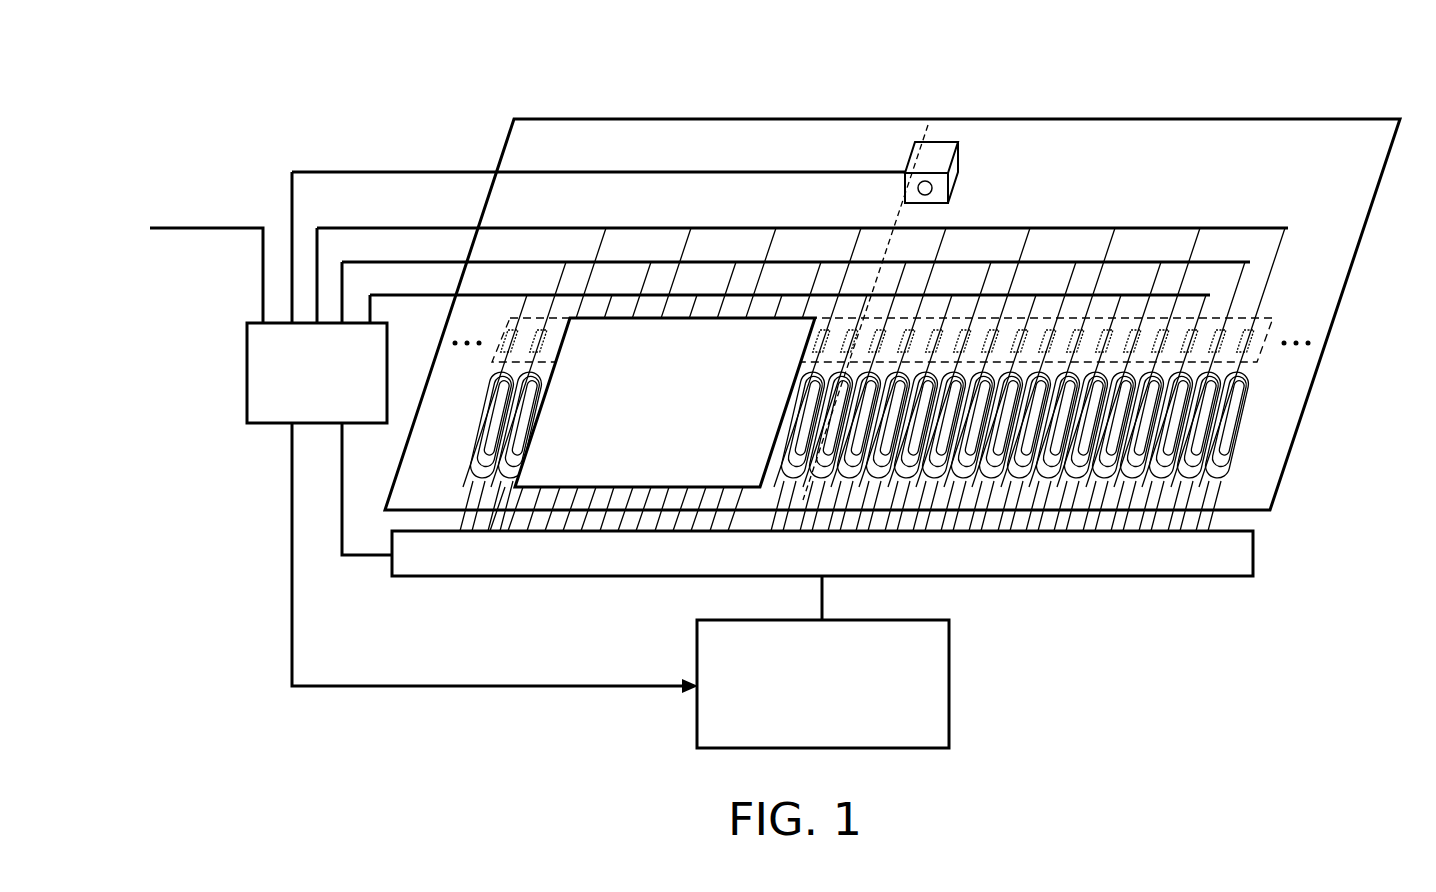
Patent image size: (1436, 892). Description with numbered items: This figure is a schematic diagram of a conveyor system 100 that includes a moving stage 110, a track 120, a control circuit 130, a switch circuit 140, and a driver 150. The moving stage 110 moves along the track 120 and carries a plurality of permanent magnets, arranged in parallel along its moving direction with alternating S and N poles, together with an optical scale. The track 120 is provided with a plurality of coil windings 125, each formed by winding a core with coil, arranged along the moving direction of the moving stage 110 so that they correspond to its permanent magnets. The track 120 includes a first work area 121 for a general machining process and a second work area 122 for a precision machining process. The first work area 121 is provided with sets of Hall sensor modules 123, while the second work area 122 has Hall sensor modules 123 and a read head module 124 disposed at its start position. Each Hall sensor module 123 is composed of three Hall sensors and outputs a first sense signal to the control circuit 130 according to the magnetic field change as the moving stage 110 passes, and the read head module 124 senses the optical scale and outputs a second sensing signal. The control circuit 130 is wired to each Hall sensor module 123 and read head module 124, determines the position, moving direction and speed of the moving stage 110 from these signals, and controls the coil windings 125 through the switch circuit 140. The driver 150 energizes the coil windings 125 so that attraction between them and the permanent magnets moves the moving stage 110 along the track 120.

The conveyor system 100 is at (200, 76).
The moving stage 110 is at (690, 422).
The track 120 is at (1307, 118).
The first work area 121 is at (698, 138).
The second work area 122 is at (1164, 136).
The Hall sensor module 123 is at (1300, 348).
The read head module 124 is at (940, 150).
The coil winding 125 is at (1240, 432).
The control circuit 130 is at (247, 375).
The switch circuit 140 is at (1255, 553).
The driver 150 is at (952, 686).